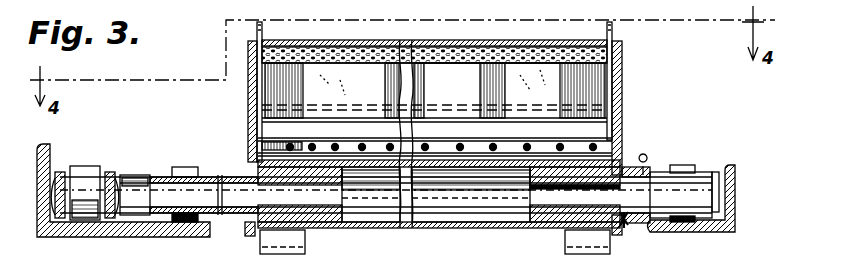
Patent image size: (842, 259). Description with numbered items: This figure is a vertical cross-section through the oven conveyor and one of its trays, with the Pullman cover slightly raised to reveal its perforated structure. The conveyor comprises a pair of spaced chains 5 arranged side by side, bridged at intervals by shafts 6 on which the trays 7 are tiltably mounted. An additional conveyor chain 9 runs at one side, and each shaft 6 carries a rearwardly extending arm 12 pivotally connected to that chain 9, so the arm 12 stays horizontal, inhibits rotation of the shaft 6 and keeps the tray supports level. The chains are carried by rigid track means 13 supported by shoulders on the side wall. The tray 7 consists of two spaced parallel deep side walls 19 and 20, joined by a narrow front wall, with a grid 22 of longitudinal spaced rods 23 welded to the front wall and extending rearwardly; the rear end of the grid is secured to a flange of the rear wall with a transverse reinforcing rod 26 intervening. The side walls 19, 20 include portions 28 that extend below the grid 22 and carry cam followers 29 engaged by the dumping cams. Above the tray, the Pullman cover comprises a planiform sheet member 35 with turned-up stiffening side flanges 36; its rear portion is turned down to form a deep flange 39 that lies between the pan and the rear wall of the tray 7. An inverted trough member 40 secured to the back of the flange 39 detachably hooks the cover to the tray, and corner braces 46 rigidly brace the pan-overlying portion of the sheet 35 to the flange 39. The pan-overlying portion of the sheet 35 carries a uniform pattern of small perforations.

The spaced chains 5 is at (694, 170).
The shafts 6 is at (506, 230).
The tray 7 is at (630, 141).
The additional conveyor chain 9 is at (88, 178).
The rearwardly extending arm 12 is at (130, 178).
The rigid track means 13 is at (210, 234).
The side wall 19 is at (248, 130).
The side wall 20 is at (622, 70).
The grid 22 is at (432, 138).
The longitudinal spaced rods 23 is at (462, 146).
The transverse reinforcing rod 26 is at (362, 147).
The portions 28 is at (247, 235).
The cam followers 29 is at (305, 243).
The planiform sheet member 35 is at (395, 40).
The stiffening side flanges 36 is at (262, 40).
The deep flange 39 is at (258, 88).
The inverted trough member 40 is at (436, 214).
The corner braces 46 is at (612, 30).